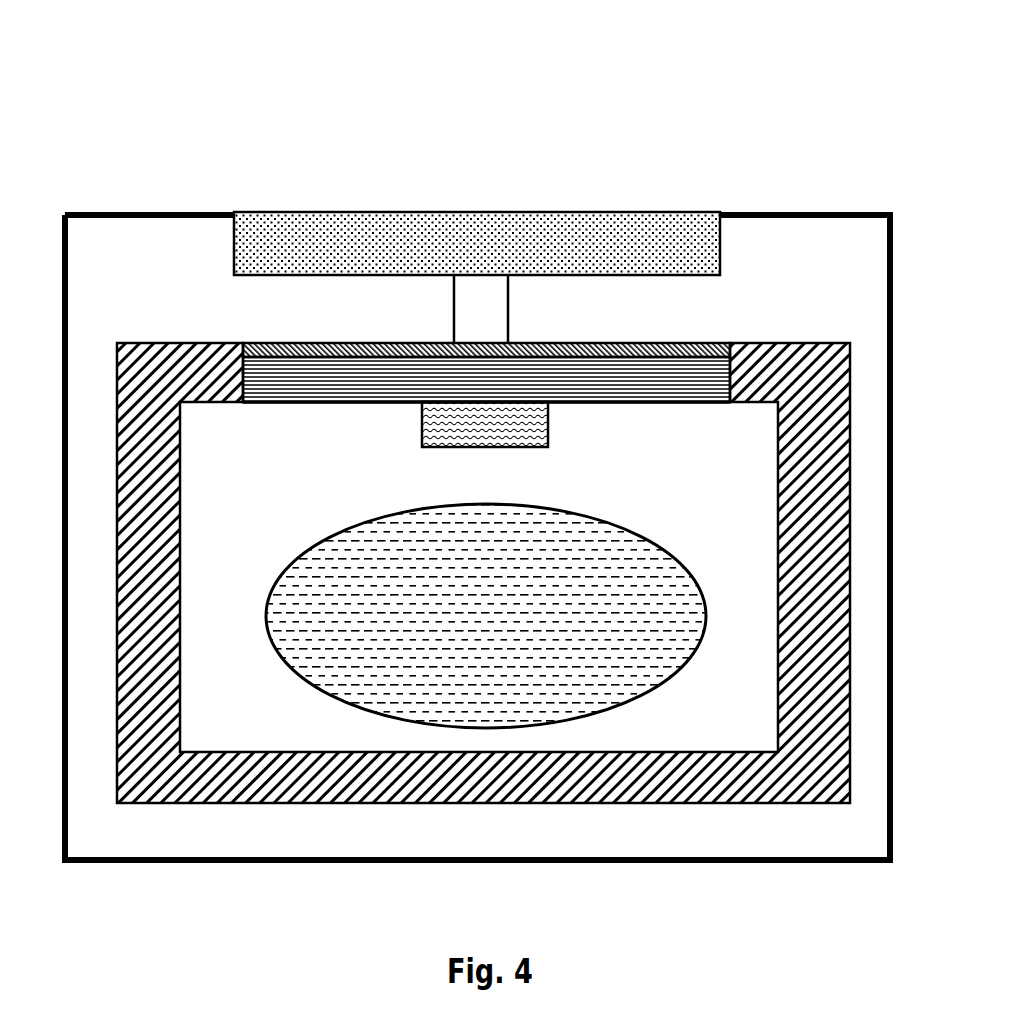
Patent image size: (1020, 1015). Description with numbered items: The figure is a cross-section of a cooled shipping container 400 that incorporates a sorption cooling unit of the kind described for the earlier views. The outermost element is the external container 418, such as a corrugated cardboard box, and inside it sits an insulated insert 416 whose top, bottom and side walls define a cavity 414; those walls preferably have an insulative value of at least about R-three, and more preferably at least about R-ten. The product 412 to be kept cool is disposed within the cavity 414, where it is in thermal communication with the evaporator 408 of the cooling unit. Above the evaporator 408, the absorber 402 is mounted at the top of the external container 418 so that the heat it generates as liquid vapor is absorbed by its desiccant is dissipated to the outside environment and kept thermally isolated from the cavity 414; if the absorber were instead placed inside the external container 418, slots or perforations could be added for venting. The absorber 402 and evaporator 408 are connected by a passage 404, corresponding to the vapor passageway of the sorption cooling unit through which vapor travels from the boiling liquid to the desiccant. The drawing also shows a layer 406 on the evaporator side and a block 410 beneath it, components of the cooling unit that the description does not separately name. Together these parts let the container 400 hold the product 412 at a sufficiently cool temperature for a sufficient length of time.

The cooled shipping container 400 is at (532, 152).
The absorber 402 is at (233, 232).
The waveguide 404 is at (508, 300).
The top layer 406 is at (648, 342).
The evaporator 408 is at (602, 402).
The susceptor block 410 is at (422, 430).
The product 412 is at (603, 518).
The cavity 414 is at (261, 525).
The insulated insert 416 is at (222, 343).
The external container 418 is at (752, 207).